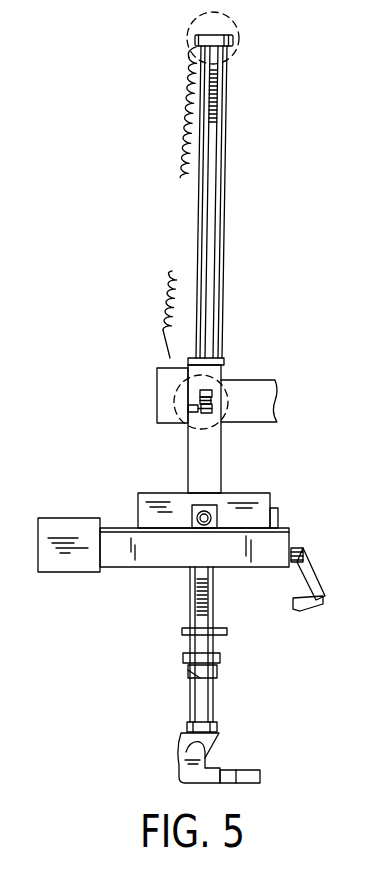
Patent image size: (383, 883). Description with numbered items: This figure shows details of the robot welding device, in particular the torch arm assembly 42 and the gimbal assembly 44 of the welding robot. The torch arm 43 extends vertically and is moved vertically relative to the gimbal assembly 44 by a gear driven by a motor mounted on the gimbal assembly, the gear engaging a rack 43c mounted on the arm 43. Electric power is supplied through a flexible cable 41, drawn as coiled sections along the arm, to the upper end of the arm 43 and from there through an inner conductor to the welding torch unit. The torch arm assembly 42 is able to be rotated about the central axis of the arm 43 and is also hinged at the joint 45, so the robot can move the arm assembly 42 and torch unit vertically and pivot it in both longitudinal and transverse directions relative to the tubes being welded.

The flexible cable 41 is at (184, 167).
The torch arm assembly 42 is at (188, 697).
The torch arm 43 is at (221, 194).
The rack 43c is at (212, 100).
The gimbal assembly 44 is at (88, 518).
The joint 45 is at (219, 662).